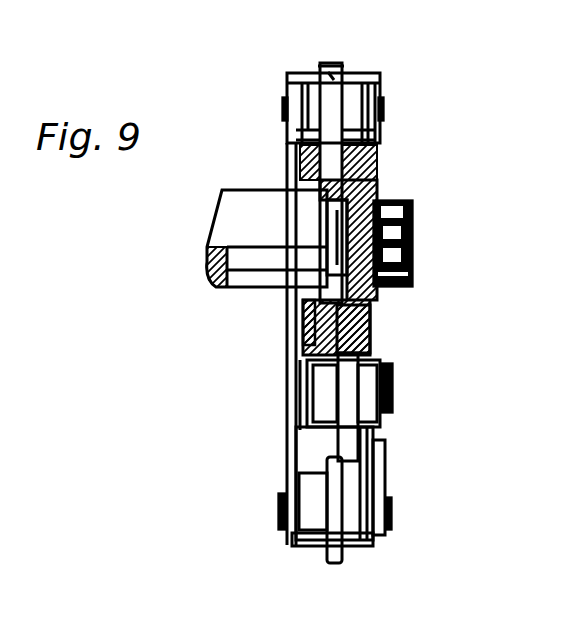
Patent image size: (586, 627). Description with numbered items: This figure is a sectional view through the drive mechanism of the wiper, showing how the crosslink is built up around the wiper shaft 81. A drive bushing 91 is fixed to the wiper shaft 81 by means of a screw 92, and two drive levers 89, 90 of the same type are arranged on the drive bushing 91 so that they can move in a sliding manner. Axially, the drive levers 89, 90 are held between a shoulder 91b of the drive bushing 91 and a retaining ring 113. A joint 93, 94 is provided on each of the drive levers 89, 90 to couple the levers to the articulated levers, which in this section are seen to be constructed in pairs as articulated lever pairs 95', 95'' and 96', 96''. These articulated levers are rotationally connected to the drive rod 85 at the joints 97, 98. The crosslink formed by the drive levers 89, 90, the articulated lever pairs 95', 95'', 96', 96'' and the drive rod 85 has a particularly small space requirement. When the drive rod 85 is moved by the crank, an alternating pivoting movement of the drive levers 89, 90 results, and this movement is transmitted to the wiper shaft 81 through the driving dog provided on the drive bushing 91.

The wiper shaft 81 is at (415, 240).
The drive rod 85 is at (330, 556).
The drive lever 89 is at (383, 370).
The drive lever 90 is at (330, 70).
The drive bushing 91 is at (380, 180).
The shoulder 91b is at (383, 148).
The screw 92 is at (405, 204).
The joint 93 is at (383, 108).
The joint 94 is at (395, 392).
The articulated lever 95' is at (402, 321).
The articulated lever 95'' is at (251, 395).
The articulated lever 96' is at (380, 482).
The articulated lever 96'' is at (265, 492).
The joint 97 is at (387, 496).
The joint 98 is at (394, 520).
The retaining ring 113 is at (300, 322).